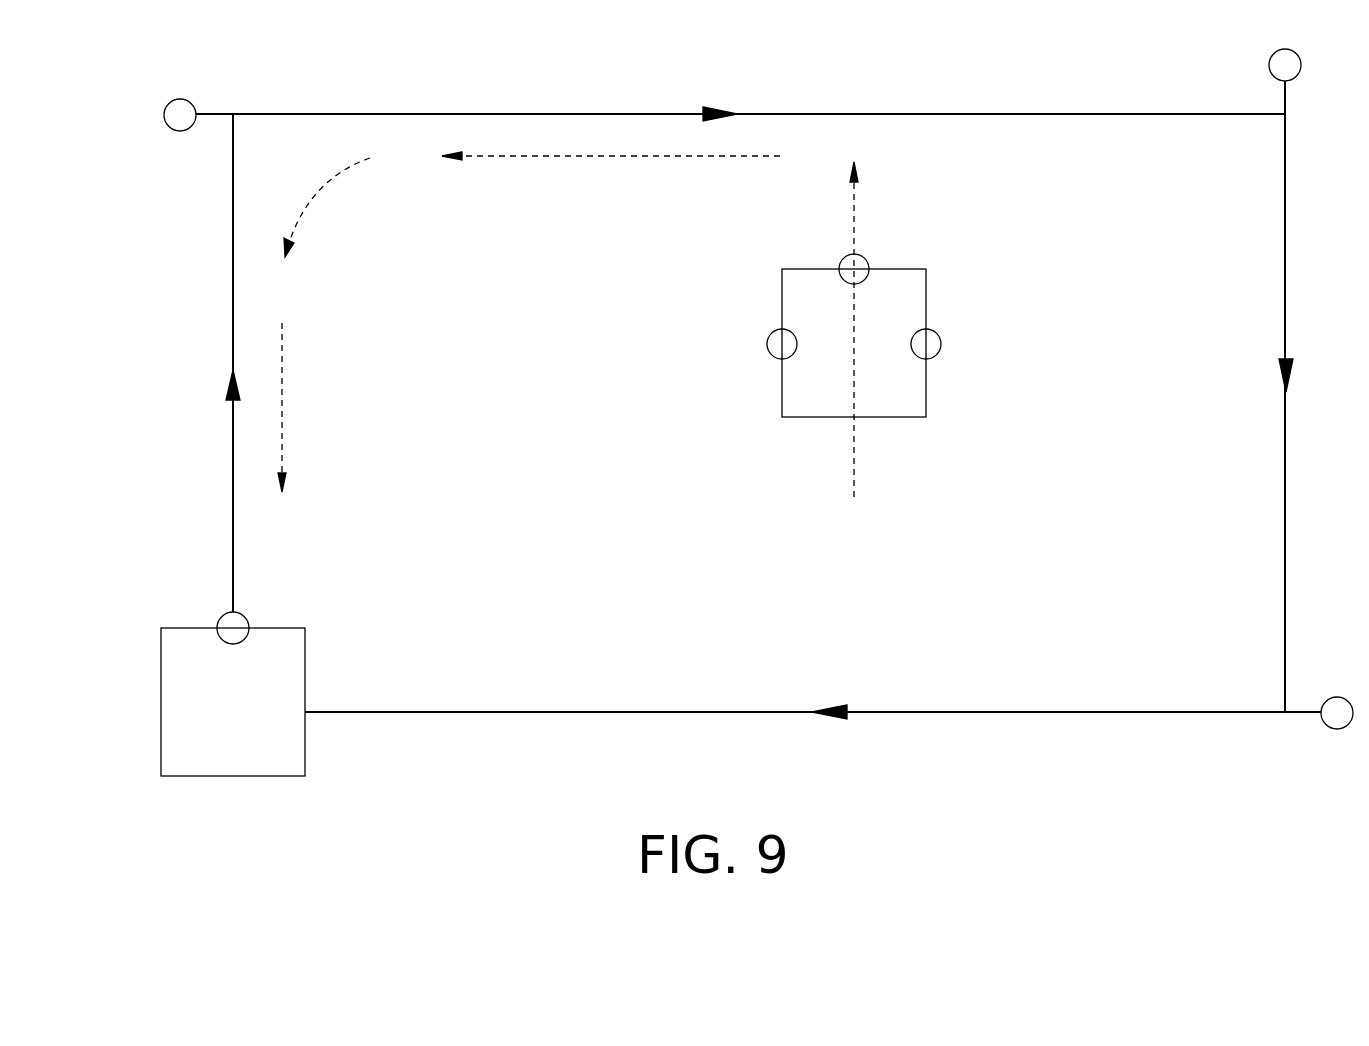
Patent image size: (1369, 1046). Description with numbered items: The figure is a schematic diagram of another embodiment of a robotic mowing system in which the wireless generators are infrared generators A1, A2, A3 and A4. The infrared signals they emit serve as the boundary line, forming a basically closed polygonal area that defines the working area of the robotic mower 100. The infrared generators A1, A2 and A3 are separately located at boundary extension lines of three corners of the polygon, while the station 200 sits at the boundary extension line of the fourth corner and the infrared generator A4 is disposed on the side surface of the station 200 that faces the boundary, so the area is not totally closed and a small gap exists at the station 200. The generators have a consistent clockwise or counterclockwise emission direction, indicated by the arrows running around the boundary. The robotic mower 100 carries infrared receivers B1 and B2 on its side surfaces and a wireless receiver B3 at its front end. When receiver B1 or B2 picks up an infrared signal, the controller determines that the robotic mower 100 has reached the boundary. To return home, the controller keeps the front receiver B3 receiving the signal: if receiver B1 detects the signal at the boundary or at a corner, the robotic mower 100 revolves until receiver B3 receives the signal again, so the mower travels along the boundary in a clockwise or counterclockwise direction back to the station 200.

The robotic mower 100 is at (986, 269).
The station 200 is at (96, 655).
The infrared generator A1 is at (165, 105).
The infrared generator A2 is at (1308, 72).
The infrared generator A3 is at (1340, 730).
The infrared generator A4 is at (217, 612).
The infrared receiver B1 is at (761, 336).
The infrared receiver B2 is at (945, 332).
The wireless receiver B3 is at (840, 251).